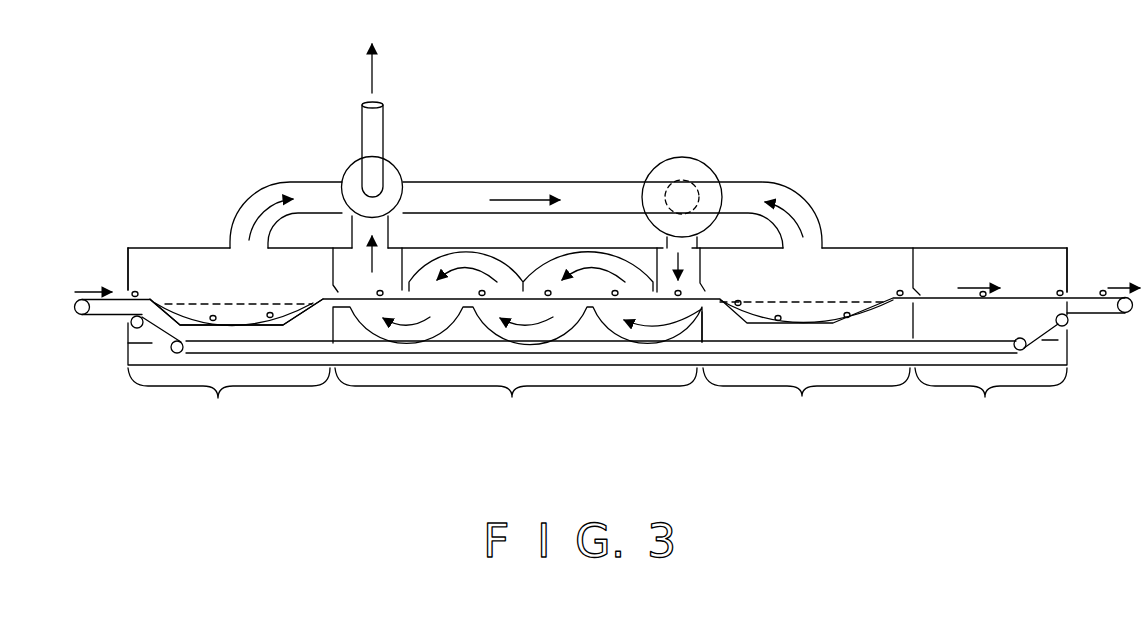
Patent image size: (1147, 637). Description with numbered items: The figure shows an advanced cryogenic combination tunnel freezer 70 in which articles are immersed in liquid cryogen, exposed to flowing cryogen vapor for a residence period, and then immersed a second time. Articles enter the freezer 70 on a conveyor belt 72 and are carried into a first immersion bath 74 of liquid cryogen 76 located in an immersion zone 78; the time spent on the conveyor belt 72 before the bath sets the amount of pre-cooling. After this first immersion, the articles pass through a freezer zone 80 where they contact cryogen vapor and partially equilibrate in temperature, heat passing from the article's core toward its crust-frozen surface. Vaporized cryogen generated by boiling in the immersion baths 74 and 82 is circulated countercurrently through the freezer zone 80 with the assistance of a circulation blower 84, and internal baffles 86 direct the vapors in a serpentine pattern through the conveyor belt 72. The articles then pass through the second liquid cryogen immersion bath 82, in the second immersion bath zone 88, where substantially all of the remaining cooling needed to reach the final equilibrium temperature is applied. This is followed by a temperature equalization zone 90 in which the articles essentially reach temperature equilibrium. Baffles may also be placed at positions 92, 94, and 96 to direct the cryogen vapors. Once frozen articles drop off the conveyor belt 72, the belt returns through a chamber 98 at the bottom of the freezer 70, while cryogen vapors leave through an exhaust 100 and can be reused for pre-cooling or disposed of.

The freezer 70 is at (836, 229).
The conveyor belt 72 is at (141, 293).
The first immersion bath 74 is at (290, 320).
The liquid cryogen 76 is at (230, 310).
The immersion zone 78 is at (229, 398).
The freezer zone 80 is at (517, 340).
The second liquid cryogen immersion bath 82 is at (868, 317).
The circulation blower 84 is at (696, 162).
The internal baffles 86 is at (508, 264).
The second immersion bath zone 88 is at (806, 398).
The temperature equalization zone 90 is at (991, 398).
The baffle position 92 is at (333, 269).
The baffle position 94 is at (703, 269).
The baffle position 96 is at (913, 267).
The chamber 98 is at (158, 321).
The exhaust 100 is at (385, 112).